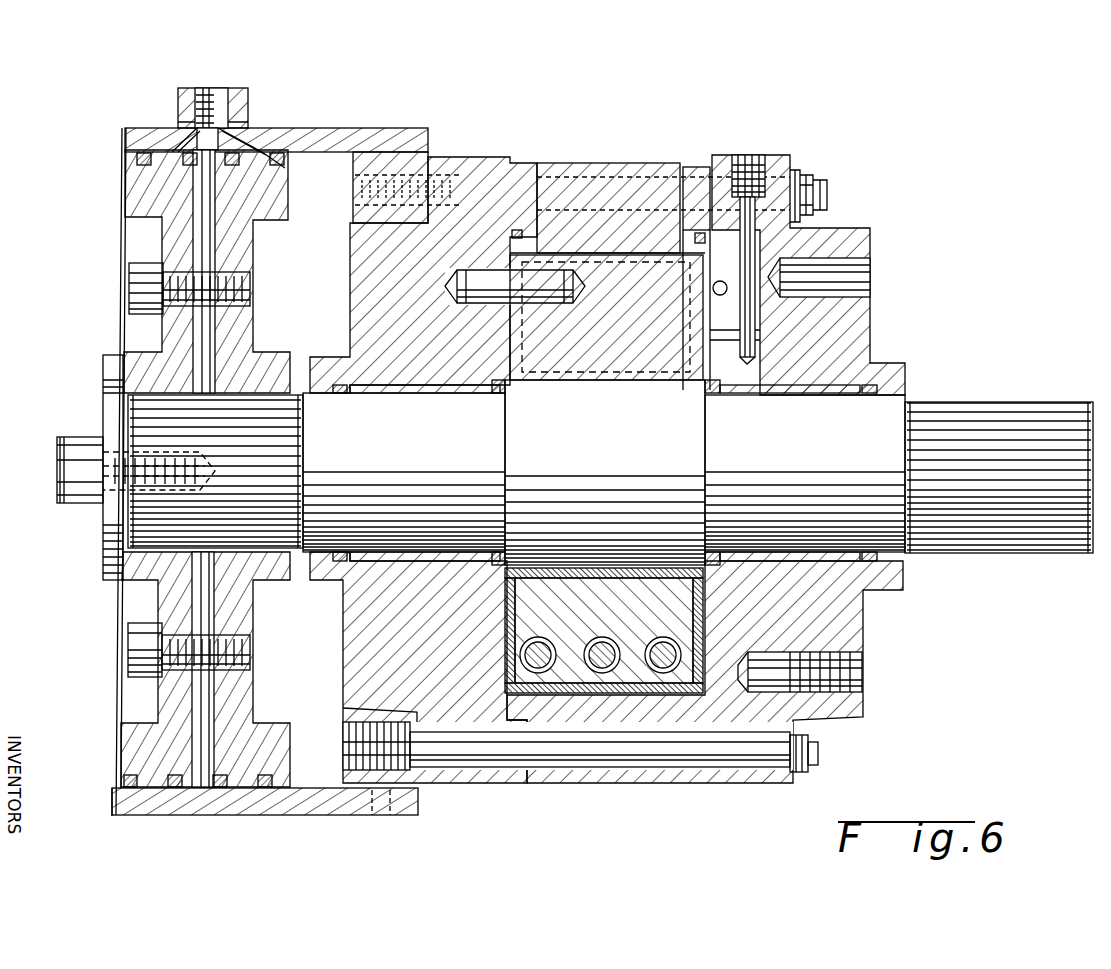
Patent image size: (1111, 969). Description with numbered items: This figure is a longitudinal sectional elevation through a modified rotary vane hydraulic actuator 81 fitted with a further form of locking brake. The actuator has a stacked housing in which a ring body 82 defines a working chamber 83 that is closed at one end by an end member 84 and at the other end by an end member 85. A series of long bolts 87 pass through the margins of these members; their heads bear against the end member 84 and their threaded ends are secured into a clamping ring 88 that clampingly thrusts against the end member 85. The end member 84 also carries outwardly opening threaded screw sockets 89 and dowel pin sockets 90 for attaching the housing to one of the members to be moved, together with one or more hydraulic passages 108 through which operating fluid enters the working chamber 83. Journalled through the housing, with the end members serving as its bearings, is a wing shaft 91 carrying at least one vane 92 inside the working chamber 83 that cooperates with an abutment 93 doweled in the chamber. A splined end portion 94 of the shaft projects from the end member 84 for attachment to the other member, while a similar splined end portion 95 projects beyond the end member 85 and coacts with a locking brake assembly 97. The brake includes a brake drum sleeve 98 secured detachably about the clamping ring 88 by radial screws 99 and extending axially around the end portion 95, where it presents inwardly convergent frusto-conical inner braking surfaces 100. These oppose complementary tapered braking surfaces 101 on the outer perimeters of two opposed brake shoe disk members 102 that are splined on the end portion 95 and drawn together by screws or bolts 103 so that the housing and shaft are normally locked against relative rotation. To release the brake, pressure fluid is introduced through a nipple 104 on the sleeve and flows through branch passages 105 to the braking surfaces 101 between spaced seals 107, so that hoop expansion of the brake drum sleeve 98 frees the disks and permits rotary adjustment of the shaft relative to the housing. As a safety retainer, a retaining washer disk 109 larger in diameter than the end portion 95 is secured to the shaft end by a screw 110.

The rotary vane hydraulic actuator 81 is at (797, 153).
The ring body 82 is at (635, 165).
The working chamber 83 is at (596, 250).
The end member 84 is at (847, 334).
The end member 85 is at (488, 161).
The long bolts 87 is at (808, 750).
The clamping ring 88 is at (378, 152).
The threaded screw sockets 89 is at (847, 682).
The dowel pin sockets 90 is at (857, 288).
The wing shaft 91 is at (648, 456).
The vane 92 is at (576, 565).
The abutment 93 is at (656, 352).
The splined end portion 94 is at (990, 425).
The splined end portion 95 is at (142, 420).
The locking brake assembly 97 is at (115, 133).
The brake drum sleeve 98 is at (318, 134).
The radial screws 99 is at (383, 820).
The frusto-conical inner braking surfaces 100 is at (143, 167).
The tapered braking surfaces 101 is at (183, 155).
The brake shoe disk members 102 is at (150, 205).
The screws or bolts 103 is at (150, 281).
The nipple 104 is at (216, 96).
The branch passages 105 is at (180, 129).
The seals 107 is at (280, 166).
The hydraulic passages 108 is at (758, 156).
The retaining washer disk 109 is at (108, 554).
The screw 110 is at (83, 478).